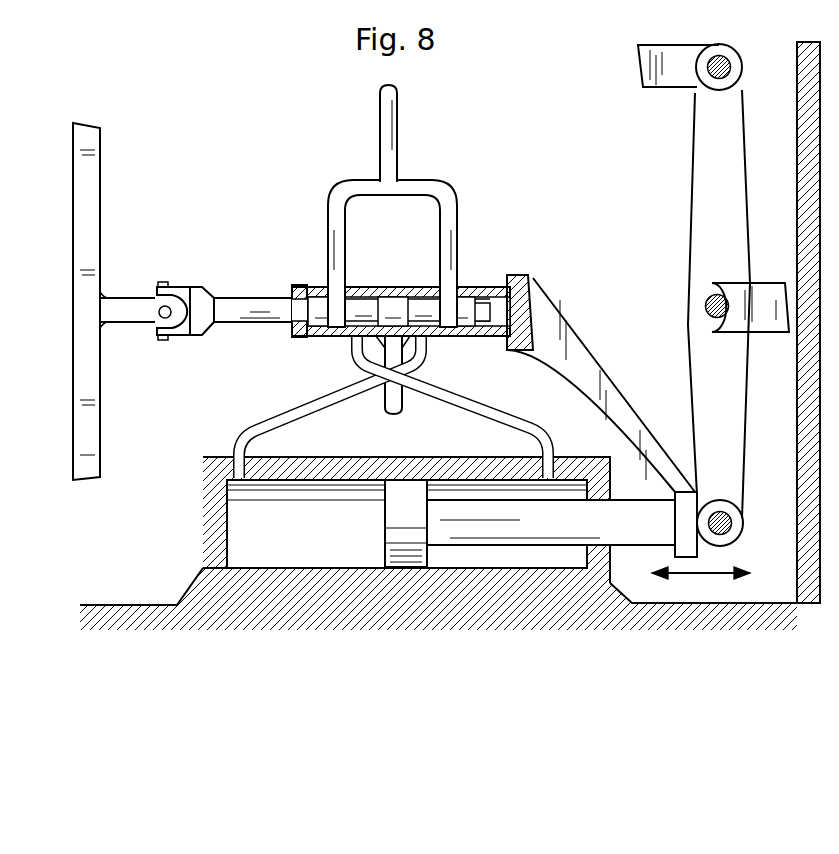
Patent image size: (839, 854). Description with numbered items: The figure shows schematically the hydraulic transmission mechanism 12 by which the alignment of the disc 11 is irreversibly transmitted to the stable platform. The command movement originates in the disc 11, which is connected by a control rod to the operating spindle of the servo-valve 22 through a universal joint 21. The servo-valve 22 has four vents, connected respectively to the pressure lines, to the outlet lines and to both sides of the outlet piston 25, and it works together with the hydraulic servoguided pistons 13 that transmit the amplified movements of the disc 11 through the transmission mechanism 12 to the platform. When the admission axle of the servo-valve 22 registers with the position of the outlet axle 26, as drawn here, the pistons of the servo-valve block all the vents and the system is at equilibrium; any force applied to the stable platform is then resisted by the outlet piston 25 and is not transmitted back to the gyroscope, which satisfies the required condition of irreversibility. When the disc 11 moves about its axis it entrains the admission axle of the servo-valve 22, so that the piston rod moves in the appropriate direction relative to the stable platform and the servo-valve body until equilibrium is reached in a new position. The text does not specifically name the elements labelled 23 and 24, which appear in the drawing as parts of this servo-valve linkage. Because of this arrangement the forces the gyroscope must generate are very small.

The disc 11 is at (88, 198).
The transmission mechanism 12 is at (698, 337).
The hydraulic servoguided pistons 13 is at (394, 548).
The universal joint 21 is at (173, 306).
The servo-valve 22 is at (464, 288).
The U-shaped bracket rod 23 is at (392, 124).
The central rod 24 is at (399, 413).
The outlet piston 25 is at (274, 420).
The outlet axle 26 is at (524, 527).